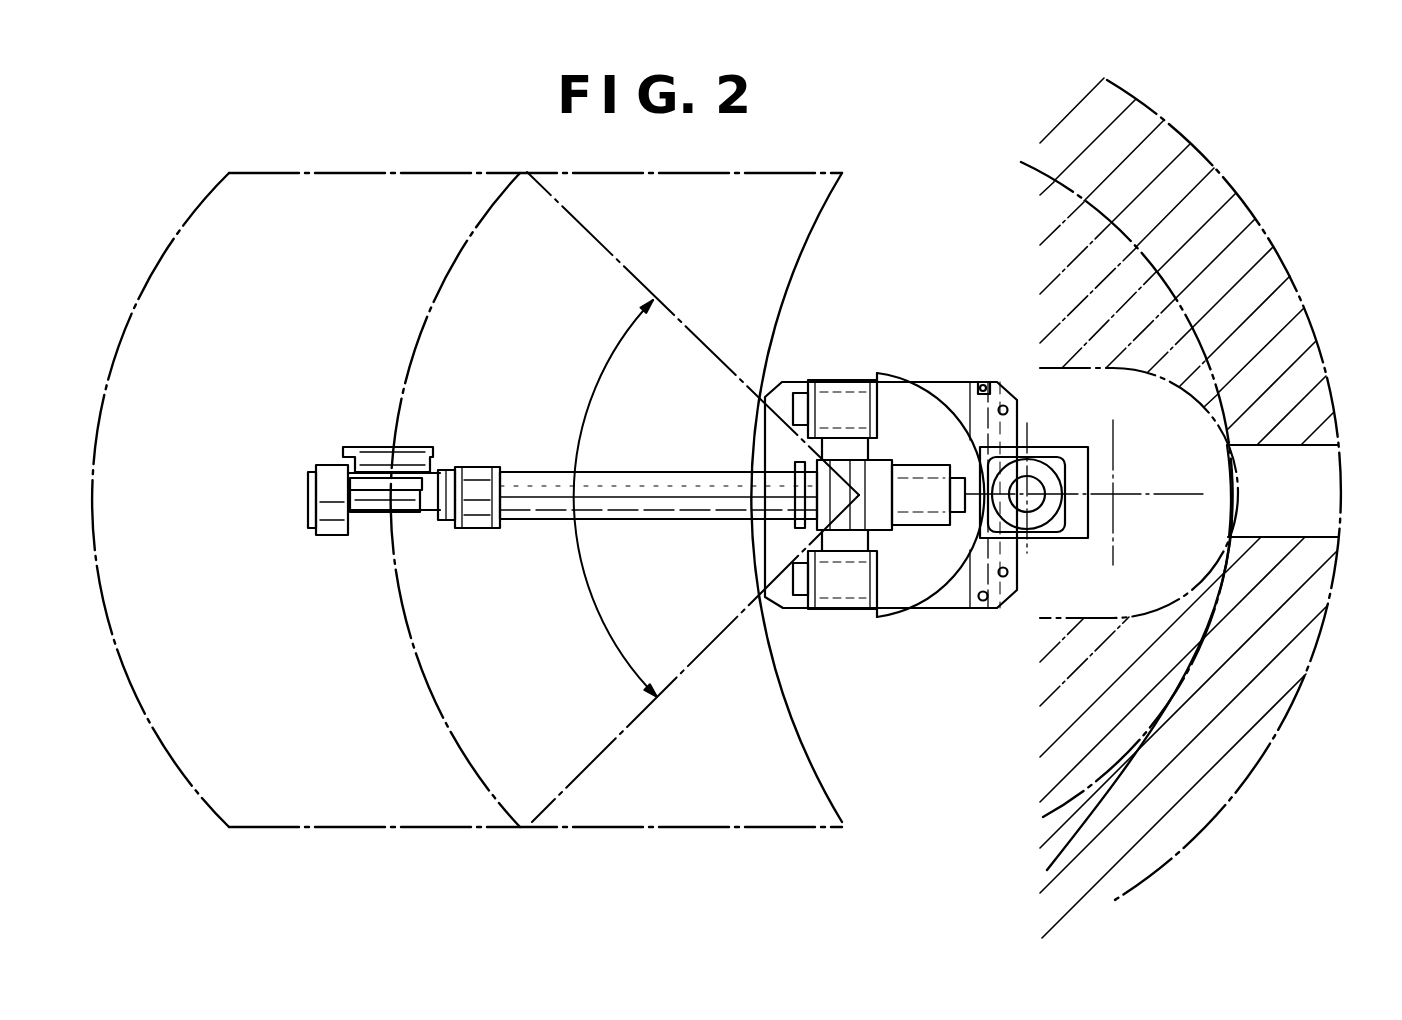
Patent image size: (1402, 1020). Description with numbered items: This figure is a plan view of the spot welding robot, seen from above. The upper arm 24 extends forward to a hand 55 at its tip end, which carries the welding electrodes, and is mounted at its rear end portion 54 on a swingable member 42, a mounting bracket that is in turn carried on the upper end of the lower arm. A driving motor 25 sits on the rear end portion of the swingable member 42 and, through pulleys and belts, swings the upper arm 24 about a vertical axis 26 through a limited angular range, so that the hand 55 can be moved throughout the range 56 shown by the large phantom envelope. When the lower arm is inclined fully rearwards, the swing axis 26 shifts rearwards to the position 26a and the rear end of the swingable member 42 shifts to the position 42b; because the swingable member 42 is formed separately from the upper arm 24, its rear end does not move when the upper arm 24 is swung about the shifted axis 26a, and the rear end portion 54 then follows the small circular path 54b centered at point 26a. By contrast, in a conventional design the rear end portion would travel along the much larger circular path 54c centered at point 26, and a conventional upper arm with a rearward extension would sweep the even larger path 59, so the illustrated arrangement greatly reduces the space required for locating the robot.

The upper arm 24 is at (662, 472).
The driving motor 25 is at (1045, 512).
The axis 26 is at (862, 478).
The shifted position of swing axis 26a is at (1118, 493).
The swingable member 42 is at (1076, 455).
The shifted position of swingable member 42b is at (1268, 503).
The rear end portion 54 is at (823, 535).
The circular path of rear end portion 54b is at (1225, 598).
The circular path of rear end portion in conventional design 54c is at (1180, 287).
The hand 55 is at (382, 517).
The range 56 is at (152, 727).
The circular path of rear end portion in conventional design 59 is at (1250, 205).